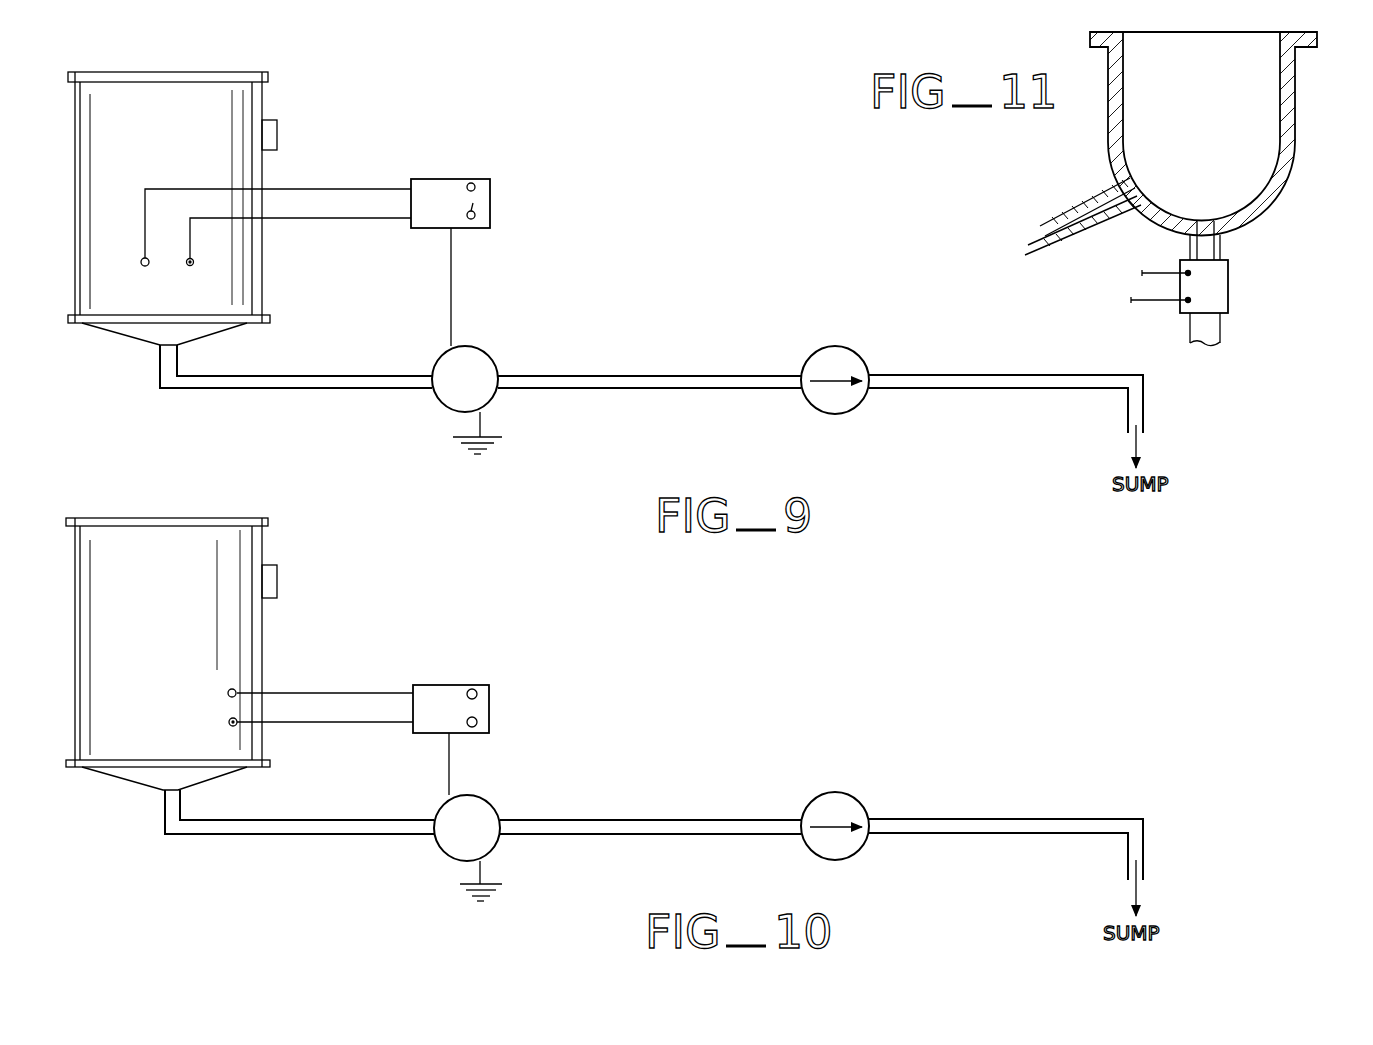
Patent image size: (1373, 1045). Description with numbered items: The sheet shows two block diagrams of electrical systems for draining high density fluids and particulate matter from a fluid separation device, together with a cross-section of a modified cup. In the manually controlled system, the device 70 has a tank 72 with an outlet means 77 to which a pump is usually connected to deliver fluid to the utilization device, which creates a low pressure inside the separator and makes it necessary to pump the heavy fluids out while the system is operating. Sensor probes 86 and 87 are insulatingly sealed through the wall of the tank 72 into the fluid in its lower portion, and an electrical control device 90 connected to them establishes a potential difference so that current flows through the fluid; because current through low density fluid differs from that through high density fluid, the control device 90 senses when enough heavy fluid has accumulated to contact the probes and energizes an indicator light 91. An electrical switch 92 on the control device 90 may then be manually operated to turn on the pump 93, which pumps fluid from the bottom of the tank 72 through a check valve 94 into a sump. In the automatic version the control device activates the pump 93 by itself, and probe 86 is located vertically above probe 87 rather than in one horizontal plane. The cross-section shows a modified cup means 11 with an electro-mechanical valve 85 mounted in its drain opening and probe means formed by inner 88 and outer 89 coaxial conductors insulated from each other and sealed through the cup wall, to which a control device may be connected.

In FIG. 9, the device 70 is at (302, 88).
In FIG. 10, the device 70 is at (300, 549).
In FIG. 9, the tank 72 is at (167, 144).
In FIG. 10, the tank 72 is at (162, 589).
In FIG. 9, the outlet means 77 is at (278, 128).
In FIG. 10, the outlet means 77 is at (278, 581).
In FIG. 9, the sensor probe 86 is at (143, 267).
In FIG. 10, the sensor probe 86 is at (228, 691).
In FIG. 9, the sensor probe 87 is at (189, 267).
In FIG. 10, the sensor probe 87 is at (229, 722).
In FIG. 9, the electrical control device 90 is at (440, 186).
In FIG. 10, the electrical control device 90 is at (447, 688).
In FIG. 9, the indicator light 91 is at (478, 186).
In FIG. 9, the switch 92 is at (486, 219).
In FIG. 9, the pump 93 is at (497, 360).
In FIG. 10, the pump 93 is at (500, 806).
In FIG. 9, the check valve 94 is at (840, 355).
In FIG. 10, the check valve 94 is at (858, 800).
In FIG. 11, the modified cup means 11 is at (1297, 115).
In FIG. 11, the electro-mechanical valve 85 is at (1230, 298).
In FIG. 11, the inner coaxial conductor 88 is at (1027, 245).
In FIG. 11, the outer coaxial conductor 89 is at (1098, 190).